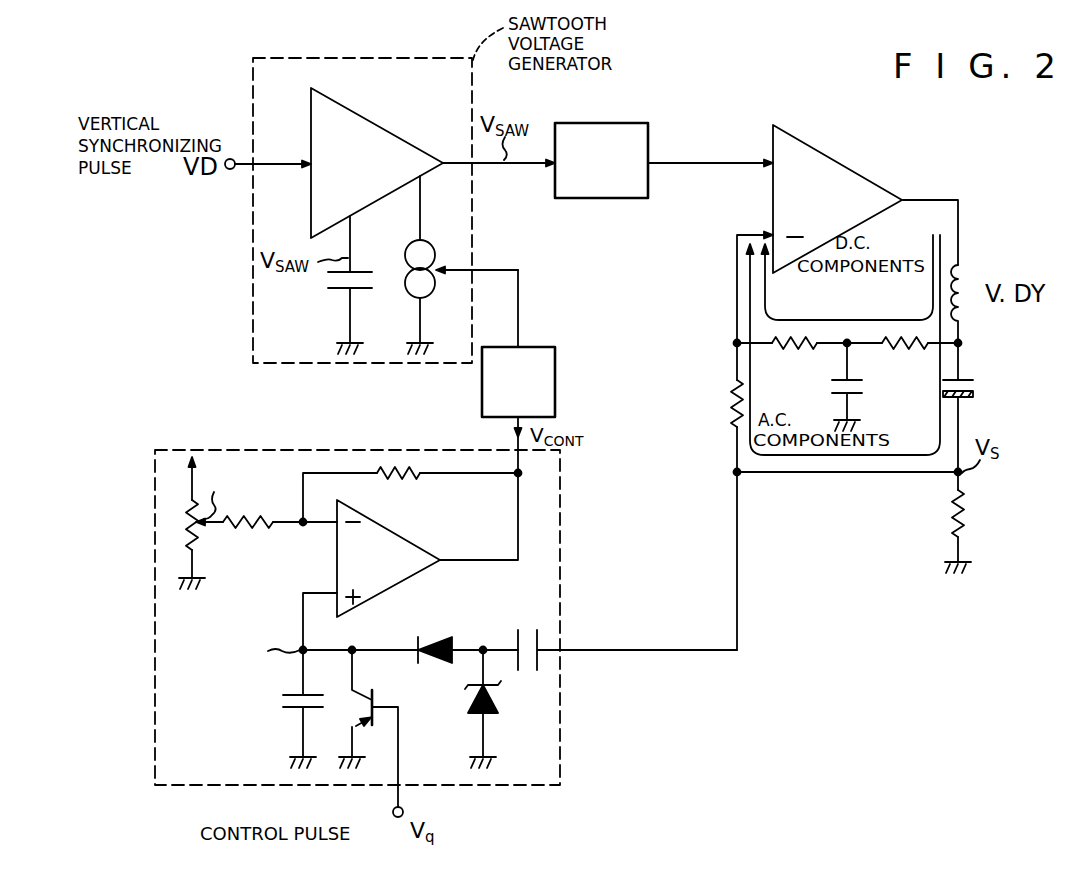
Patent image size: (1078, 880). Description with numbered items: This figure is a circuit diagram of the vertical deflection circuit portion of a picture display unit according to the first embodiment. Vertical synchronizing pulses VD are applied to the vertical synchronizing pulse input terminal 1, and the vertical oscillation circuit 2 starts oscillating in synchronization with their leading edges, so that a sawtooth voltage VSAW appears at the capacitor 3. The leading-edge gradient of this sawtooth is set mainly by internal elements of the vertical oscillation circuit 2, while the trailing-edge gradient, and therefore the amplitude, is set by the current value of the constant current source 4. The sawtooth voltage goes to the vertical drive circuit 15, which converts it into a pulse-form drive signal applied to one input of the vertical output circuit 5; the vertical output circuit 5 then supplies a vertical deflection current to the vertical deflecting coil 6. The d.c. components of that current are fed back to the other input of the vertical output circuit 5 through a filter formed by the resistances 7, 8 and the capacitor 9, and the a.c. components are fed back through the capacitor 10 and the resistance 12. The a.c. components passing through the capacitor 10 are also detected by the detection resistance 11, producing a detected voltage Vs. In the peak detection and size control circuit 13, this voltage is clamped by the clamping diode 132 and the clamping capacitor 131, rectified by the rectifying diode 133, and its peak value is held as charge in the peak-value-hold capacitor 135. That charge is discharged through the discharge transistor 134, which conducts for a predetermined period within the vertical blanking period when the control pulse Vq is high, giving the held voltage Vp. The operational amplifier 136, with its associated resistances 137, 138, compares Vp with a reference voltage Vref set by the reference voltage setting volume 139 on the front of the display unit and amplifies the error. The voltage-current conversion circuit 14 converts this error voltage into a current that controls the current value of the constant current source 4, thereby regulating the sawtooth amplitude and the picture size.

The vertical synchronizing pulse input terminal 1 is at (230, 170).
The vertical oscillation circuit 2 is at (386, 130).
The capacitor 3 is at (340, 288).
The constant current source 4 is at (438, 252).
The vertical output circuit 5 is at (812, 148).
The vertical deflecting coil 6 is at (965, 273).
The resistance 7 is at (899, 336).
The resistance 8 is at (795, 336).
The capacitor 9 is at (830, 395).
The capacitor 10 is at (975, 392).
The detection resistance 11 is at (968, 513).
The resistance 12 is at (730, 408).
The peak detection and size control circuit 13 is at (560, 776).
The voltage-current conversion circuit 14 is at (555, 347).
The vertical drive circuit 15 is at (649, 123).
The clamping capacitor 131 is at (519, 630).
The clamping diode 132 is at (488, 712).
The rectifying diode 133 is at (443, 634).
The discharge transistor 134 is at (375, 698).
The peak-value-hold capacitor 135 is at (290, 698).
The operational amplifier 136 is at (432, 558).
The resistance 137 is at (418, 477).
The resistance 138 is at (260, 530).
The reference voltage setting volume 139 is at (200, 566).